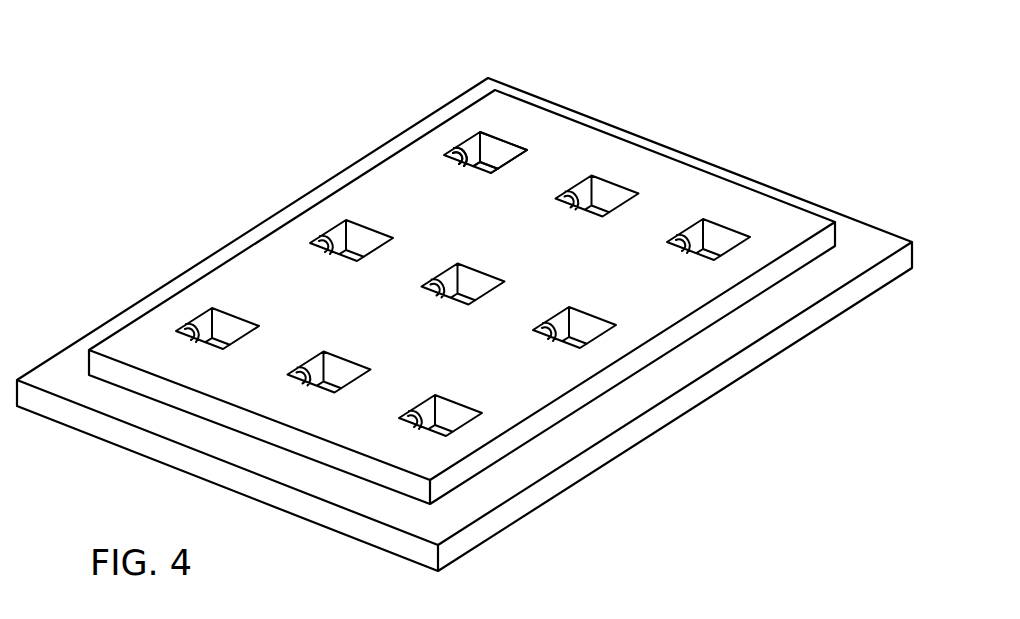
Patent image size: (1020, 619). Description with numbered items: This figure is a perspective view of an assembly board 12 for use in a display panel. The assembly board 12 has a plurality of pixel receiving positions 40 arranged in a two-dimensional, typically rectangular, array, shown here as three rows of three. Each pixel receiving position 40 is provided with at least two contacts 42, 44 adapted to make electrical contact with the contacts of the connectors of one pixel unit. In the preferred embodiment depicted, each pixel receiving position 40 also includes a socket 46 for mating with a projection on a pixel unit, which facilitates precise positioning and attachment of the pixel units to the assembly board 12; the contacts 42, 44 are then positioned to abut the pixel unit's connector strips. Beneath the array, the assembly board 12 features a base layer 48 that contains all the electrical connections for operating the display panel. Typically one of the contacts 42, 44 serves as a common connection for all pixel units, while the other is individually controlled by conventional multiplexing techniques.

The assembly board 12 is at (785, 160).
The pixel receiving position 40 is at (503, 138).
The contact 42 is at (462, 143).
The contact 44 is at (512, 155).
The socket 46 is at (480, 163).
The base layer 48 is at (598, 455).